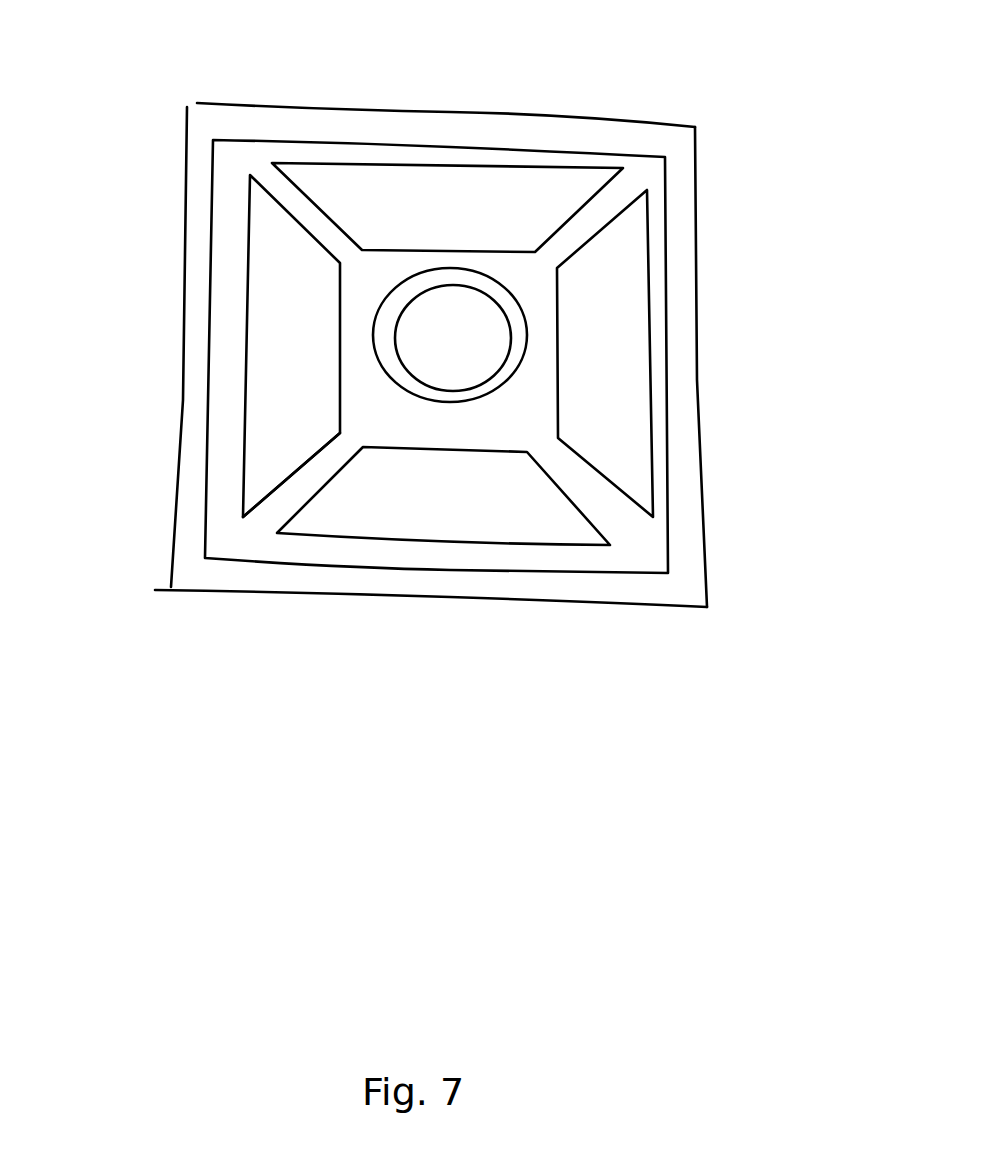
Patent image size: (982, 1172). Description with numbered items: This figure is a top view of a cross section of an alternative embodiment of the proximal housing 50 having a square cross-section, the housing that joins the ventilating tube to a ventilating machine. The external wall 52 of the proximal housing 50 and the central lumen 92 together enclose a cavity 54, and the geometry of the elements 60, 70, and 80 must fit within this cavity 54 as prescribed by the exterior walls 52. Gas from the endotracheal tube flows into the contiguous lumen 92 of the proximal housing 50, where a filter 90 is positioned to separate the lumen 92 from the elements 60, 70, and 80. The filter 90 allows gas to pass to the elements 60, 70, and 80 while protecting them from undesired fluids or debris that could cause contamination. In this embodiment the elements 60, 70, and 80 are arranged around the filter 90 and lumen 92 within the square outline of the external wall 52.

The proximal housing 50 is at (697, 150).
The external wall 52 is at (317, 125).
The cavity 54 is at (250, 537).
The element 60 is at (478, 163).
The element 70 is at (647, 220).
The element 80 is at (512, 542).
The filter 90 is at (527, 357).
The lumen 92 is at (487, 337).